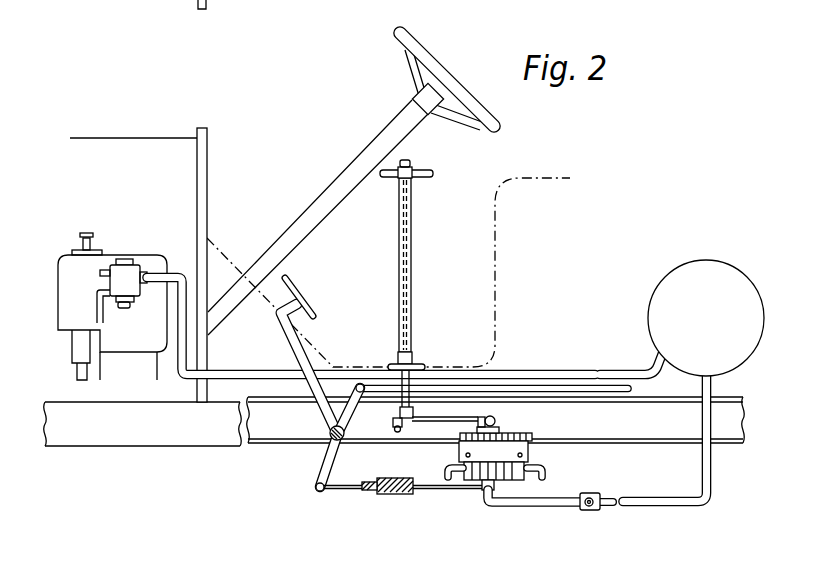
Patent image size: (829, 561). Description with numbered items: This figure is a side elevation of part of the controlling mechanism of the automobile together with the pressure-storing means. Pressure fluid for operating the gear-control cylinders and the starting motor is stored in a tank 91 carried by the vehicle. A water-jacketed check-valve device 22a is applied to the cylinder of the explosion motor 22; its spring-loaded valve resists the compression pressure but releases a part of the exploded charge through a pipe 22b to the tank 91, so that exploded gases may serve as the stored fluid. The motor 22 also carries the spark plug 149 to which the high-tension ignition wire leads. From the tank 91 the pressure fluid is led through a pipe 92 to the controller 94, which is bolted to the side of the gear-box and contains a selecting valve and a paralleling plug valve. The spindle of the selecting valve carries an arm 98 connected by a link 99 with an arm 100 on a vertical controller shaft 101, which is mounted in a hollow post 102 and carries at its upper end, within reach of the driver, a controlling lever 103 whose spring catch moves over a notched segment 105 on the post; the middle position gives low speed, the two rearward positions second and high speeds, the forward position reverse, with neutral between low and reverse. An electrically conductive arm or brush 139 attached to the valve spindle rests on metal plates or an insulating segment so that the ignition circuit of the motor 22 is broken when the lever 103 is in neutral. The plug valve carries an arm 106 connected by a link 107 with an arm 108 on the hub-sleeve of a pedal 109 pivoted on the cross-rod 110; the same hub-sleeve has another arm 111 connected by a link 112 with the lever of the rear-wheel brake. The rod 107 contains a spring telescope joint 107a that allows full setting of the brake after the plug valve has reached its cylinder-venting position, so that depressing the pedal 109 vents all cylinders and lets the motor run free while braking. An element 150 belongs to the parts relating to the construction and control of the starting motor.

The motor 22 is at (95, 347).
The water-jacketed check-valve device 22a is at (128, 275).
The pipe 22b is at (657, 363).
The tank 91 is at (729, 266).
The pipe 92 is at (711, 487).
The controller 94 is at (530, 451).
The arm 98 is at (490, 418).
The link 99 is at (468, 421).
The arm 100 is at (402, 412).
The vertical controller shaft 101 is at (426, 368).
The hollow post 102 is at (411, 276).
The controlling lever 103 is at (408, 168).
The notched segment 105 is at (432, 176).
The arm 106 is at (487, 497).
The link 107 is at (463, 486).
The spring telescope joint 107a is at (397, 496).
The arm 108 is at (342, 456).
The pedal 109 is at (291, 347).
The cross-rod 110 is at (330, 440).
The arm 111 is at (349, 413).
The link 112 is at (612, 392).
The electrically conductive arm or brush 139 is at (507, 430).
The spark plug 149 is at (82, 245).
The starting-motor control element 150 is at (590, 510).